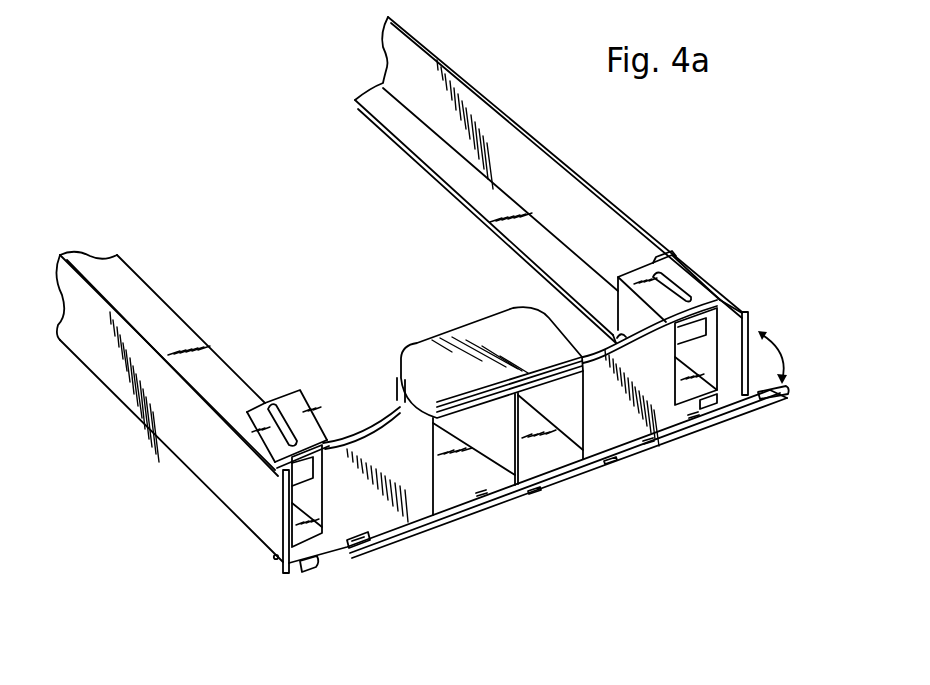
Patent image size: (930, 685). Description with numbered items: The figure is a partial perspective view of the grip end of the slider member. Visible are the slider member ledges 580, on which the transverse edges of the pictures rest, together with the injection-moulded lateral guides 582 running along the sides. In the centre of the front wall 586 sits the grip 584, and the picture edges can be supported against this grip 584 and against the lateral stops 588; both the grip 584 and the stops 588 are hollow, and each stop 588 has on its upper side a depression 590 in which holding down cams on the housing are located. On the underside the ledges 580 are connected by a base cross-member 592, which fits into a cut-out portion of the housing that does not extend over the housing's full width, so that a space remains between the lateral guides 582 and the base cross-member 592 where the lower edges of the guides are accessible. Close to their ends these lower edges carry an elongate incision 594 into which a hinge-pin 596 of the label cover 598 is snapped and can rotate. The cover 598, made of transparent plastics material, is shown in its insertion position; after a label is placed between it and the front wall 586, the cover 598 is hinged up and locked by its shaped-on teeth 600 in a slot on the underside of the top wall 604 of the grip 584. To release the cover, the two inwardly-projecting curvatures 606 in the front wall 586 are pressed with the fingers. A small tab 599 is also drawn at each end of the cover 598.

The slider member ledges 580 is at (385, 132).
The lateral guides 582 is at (418, 40).
The grip 584 is at (462, 325).
The front wall 586 is at (362, 517).
The lateral stops 588 is at (273, 407).
The depression 590 is at (710, 300).
The base cross-member 592 is at (586, 340).
The elongate incision 594 is at (282, 575).
The hinge-pin 596 is at (273, 558).
The label cover 598 is at (731, 421).
The tab 599 is at (360, 561).
The shaped-on teeth 600 is at (613, 462).
The top wall 604 is at (495, 397).
The inwardly-projecting curvatures 606 is at (365, 432).